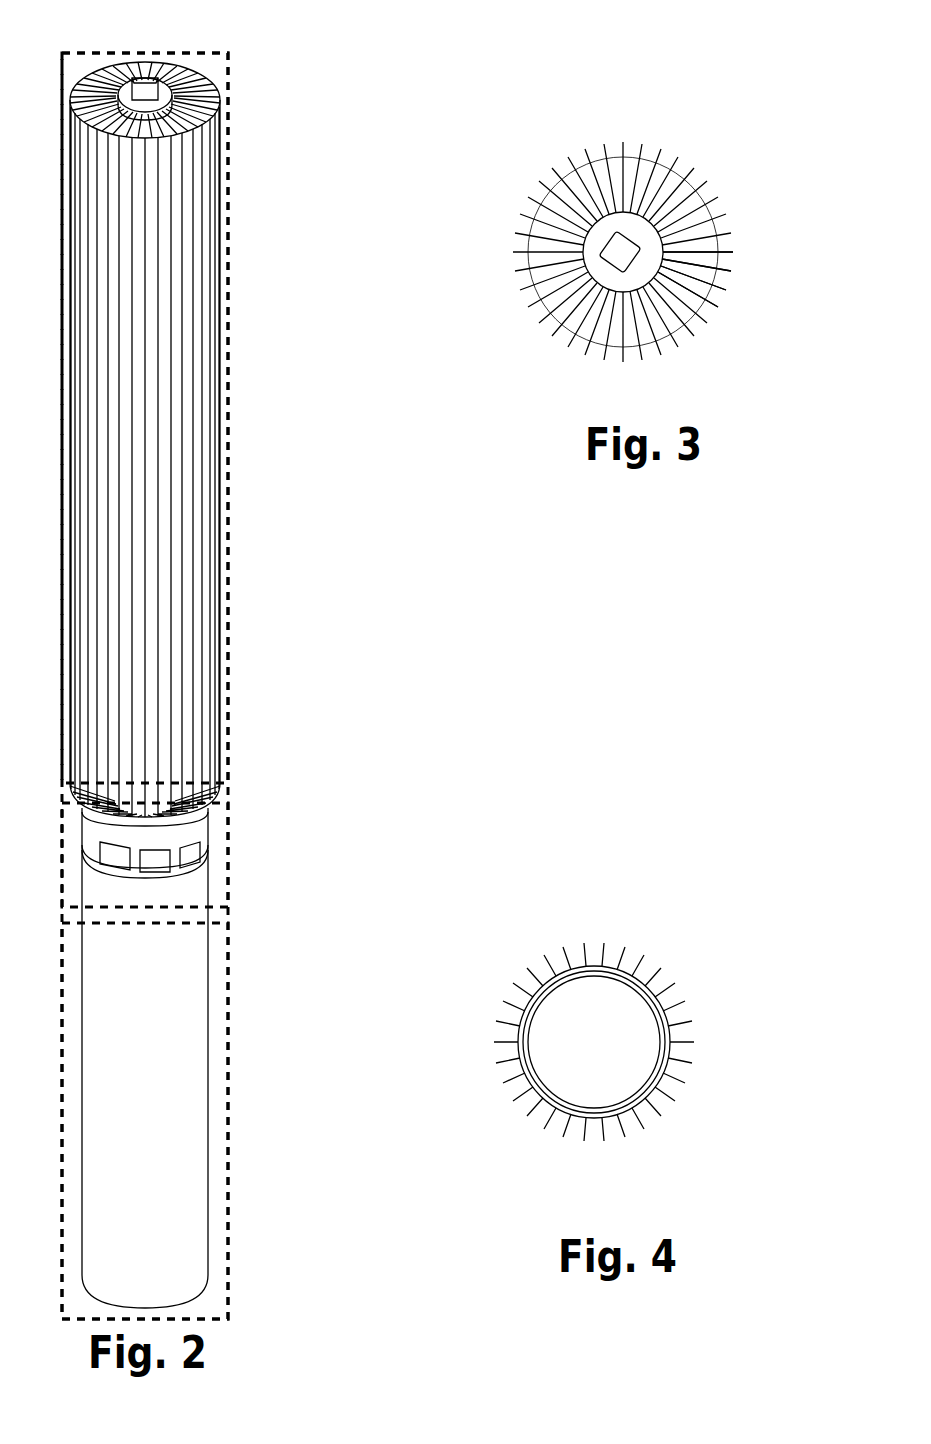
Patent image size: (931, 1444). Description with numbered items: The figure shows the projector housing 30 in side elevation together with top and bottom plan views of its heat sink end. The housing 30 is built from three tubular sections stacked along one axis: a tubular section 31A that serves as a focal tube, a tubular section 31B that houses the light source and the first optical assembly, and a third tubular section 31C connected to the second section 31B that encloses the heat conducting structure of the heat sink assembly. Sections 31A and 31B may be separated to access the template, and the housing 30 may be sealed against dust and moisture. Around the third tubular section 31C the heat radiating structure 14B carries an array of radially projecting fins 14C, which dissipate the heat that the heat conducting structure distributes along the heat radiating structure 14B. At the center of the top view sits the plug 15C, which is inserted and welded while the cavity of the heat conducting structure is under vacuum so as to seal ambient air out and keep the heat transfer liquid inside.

In FIG. 2, the housing 30 is at (262, 108).
In FIG. 2, the third tubular section 31C is at (228, 528).
In FIG. 2, the tubular section 31B is at (228, 847).
In FIG. 2, the tubular section 31A is at (228, 1023).
In FIG. 3, the fins 14C is at (705, 212).
In FIG. 4, the fins 14C is at (665, 988).
In FIG. 3, the heat radiating structure 14B is at (702, 268).
In FIG. 3, the plug 15C is at (600, 237).